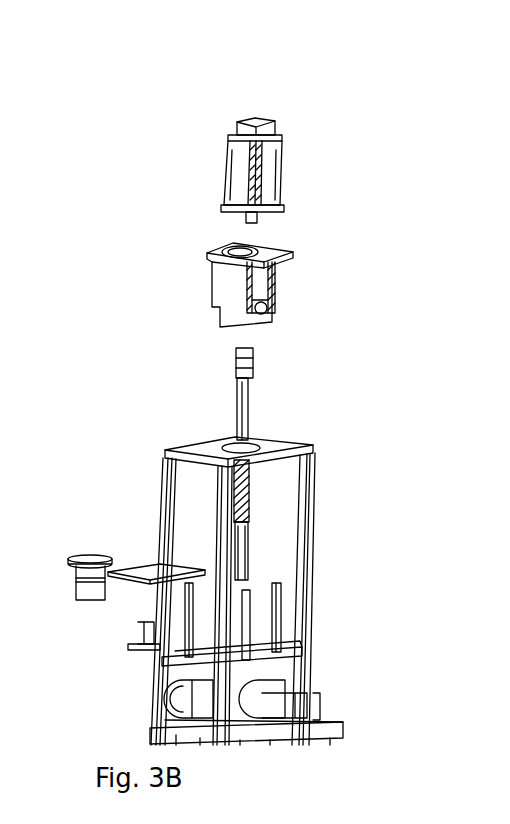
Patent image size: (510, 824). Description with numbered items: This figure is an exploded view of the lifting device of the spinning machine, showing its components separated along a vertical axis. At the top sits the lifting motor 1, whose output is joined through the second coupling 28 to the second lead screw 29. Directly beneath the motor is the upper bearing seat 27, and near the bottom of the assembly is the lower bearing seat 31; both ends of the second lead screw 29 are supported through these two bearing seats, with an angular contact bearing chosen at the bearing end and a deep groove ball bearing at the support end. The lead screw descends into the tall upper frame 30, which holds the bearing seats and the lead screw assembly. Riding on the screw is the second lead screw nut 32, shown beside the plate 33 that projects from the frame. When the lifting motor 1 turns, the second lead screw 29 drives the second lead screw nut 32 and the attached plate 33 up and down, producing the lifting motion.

The lifting motor 1 is at (298, 126).
The upper bearing seat 27 is at (295, 224).
The second coupling 28 is at (309, 288).
The second lead screw 29 is at (307, 347).
The upper frame 30 is at (265, 547).
The lower bearing seat 31 is at (104, 677).
The second lead screw nut 32 is at (67, 602).
The plate 33 is at (123, 434).